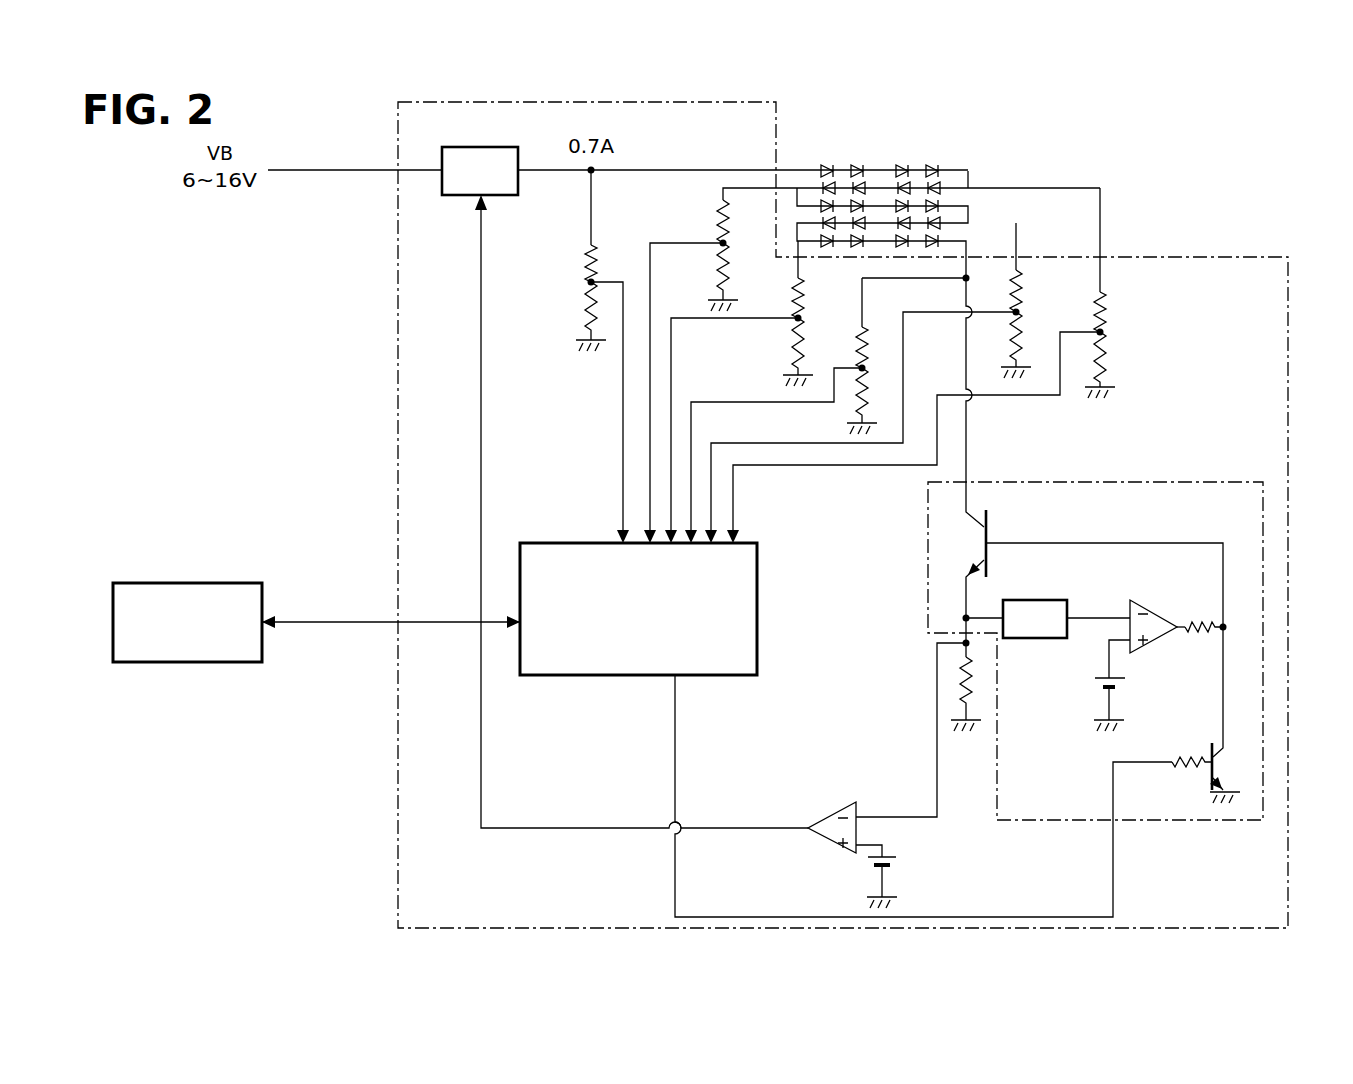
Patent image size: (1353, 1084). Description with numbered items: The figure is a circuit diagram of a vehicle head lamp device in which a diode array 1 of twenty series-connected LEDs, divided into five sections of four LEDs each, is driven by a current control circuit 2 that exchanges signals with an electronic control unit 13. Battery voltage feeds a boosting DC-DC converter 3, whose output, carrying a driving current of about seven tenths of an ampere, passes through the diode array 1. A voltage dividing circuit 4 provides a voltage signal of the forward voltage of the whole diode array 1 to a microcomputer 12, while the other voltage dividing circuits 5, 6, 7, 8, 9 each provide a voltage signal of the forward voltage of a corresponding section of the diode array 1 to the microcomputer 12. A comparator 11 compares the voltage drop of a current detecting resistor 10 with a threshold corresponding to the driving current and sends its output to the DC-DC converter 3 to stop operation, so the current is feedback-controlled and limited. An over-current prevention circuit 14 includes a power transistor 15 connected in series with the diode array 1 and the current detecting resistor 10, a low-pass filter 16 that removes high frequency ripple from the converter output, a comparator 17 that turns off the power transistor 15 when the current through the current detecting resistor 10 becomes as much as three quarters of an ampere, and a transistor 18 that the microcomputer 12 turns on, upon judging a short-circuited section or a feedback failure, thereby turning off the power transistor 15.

The diode array 1 is at (909, 150).
The current control circuit 2 is at (1290, 800).
The boosting DC-DC converter 3 is at (482, 147).
The voltage dividing circuit 4 is at (583, 262).
The voltage dividing circuit 5 is at (716, 262).
The voltage dividing circuit 6 is at (790, 338).
The voltage dividing circuit 7 is at (870, 388).
The voltage dividing circuit 8 is at (1010, 330).
The voltage dividing circuit 9 is at (1093, 358).
The current detecting resistor 10 is at (976, 700).
The comparator 11 is at (846, 802).
The microcomputer 12 is at (720, 676).
The electronic control unit 13 is at (262, 640).
The over-current prevention circuit 14 is at (1122, 482).
The power transistor 15 is at (988, 521).
The low-pass filter 16 is at (1043, 638).
The comparator 17 is at (1152, 606).
The transistor 18 is at (1210, 756).